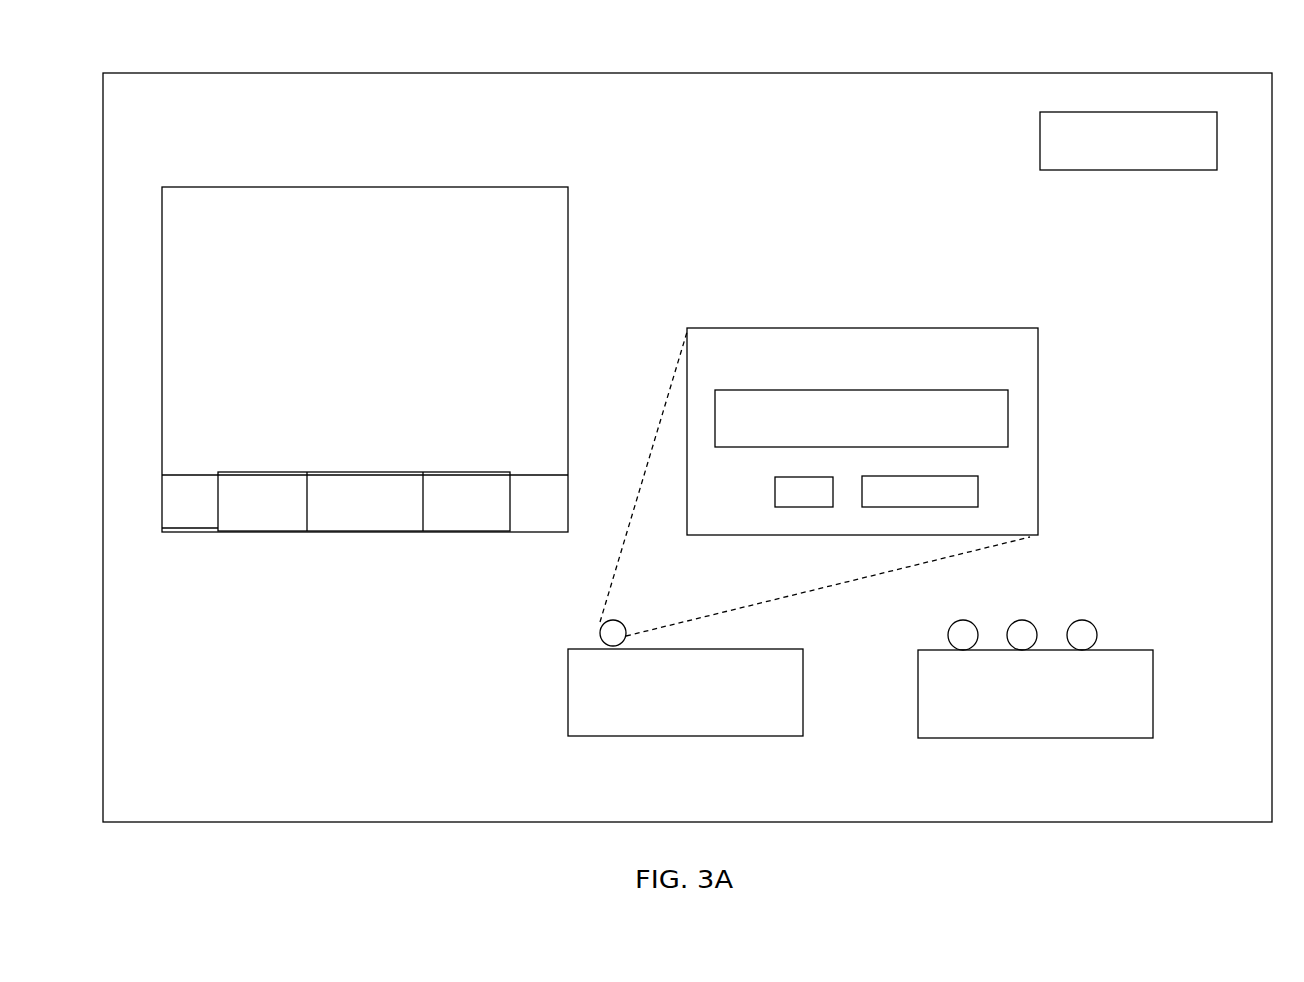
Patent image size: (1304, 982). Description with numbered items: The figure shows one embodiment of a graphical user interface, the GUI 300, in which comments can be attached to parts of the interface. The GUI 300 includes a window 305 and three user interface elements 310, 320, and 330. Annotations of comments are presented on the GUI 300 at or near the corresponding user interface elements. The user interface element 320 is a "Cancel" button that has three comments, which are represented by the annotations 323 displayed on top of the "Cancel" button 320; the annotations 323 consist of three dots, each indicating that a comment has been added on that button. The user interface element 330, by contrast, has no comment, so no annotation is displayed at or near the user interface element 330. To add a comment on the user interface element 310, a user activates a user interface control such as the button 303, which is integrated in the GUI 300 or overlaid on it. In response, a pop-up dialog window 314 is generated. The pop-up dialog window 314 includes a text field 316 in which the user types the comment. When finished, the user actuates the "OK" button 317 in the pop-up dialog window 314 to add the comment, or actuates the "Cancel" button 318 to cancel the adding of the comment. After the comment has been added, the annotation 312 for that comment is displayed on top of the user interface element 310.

The GUI 300 is at (923, 57).
The button 303 is at (1155, 110).
The window 305 is at (272, 132).
The user interface element 310 is at (653, 737).
The annotation 312 is at (602, 622).
The pop-up dialog window 314 is at (833, 328).
The text field 316 is at (903, 390).
The "OK" button 317 is at (775, 502).
The "Cancel" button 318 is at (965, 473).
The user interface element 320 is at (1065, 738).
The annotations 323 is at (1168, 580).
The user interface element 330 is at (540, 533).